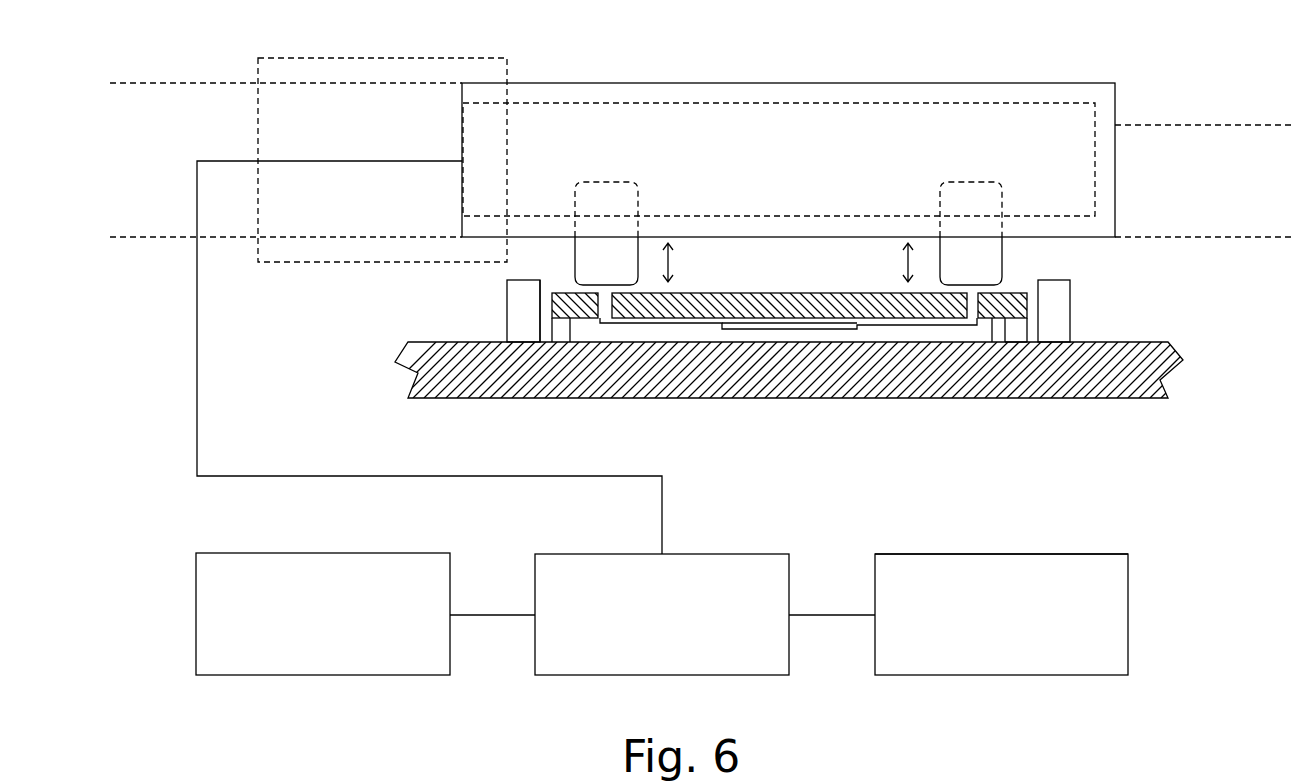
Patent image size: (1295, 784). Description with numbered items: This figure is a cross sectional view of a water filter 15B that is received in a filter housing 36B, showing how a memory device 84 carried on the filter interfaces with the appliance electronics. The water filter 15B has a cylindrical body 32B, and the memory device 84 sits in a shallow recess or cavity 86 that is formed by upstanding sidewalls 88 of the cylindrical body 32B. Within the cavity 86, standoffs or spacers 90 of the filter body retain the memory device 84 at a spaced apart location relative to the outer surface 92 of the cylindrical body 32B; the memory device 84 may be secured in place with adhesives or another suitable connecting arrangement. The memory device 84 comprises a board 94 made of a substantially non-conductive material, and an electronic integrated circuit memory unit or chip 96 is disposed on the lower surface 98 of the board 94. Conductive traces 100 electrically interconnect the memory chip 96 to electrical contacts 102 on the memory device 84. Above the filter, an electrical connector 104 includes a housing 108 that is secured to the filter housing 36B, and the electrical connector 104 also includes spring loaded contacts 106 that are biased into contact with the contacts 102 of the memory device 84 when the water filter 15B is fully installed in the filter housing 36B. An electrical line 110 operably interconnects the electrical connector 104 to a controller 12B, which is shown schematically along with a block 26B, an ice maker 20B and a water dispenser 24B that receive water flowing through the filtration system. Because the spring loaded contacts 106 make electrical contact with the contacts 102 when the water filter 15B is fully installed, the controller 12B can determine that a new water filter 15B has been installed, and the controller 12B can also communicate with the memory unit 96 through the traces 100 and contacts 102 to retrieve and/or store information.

The housing 108 is at (762, 84).
The electrical connector 104 is at (893, 84).
The filter housing 36B is at (1180, 124).
The electrical contacts 102 is at (575, 285).
The spring loaded contacts 106 is at (622, 250).
The board 94 is at (882, 292).
The memory device 84 is at (1013, 285).
The water filter 15B is at (771, 338).
The cavity 86 is at (547, 283).
The upstanding sidewalls 88 is at (505, 302).
The cylindrical body 32B is at (432, 341).
The electrical line 110 is at (197, 375).
The spacers 90 is at (560, 330).
The traces 100 is at (658, 325).
The memory chip 96 is at (738, 330).
The outer surface 92 is at (790, 333).
The lower surface 98 is at (993, 335).
The controller 26B is at (365, 678).
The controller 12B is at (707, 677).
The ice maker 20B is at (975, 678).
The water dispenser 24B is at (1011, 637).